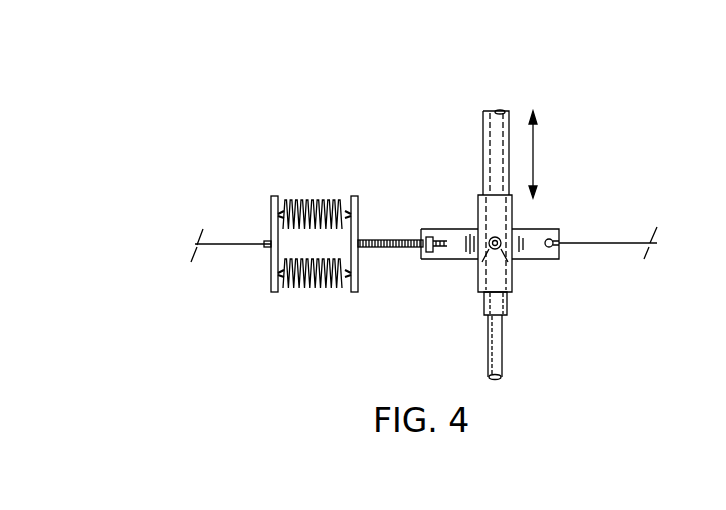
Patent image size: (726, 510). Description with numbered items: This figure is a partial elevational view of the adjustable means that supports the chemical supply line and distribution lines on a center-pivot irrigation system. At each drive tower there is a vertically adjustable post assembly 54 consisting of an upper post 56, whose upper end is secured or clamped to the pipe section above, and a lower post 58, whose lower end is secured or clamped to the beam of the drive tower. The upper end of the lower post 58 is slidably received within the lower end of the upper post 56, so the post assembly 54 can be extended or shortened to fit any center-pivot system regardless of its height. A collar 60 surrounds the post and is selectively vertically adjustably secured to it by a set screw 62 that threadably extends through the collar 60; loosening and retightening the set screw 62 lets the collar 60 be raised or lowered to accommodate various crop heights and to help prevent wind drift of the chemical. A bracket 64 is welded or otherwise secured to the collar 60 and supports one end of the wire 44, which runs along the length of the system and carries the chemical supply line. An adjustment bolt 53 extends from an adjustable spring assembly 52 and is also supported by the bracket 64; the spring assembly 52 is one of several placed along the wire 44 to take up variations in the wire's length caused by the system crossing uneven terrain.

The wire 44 is at (623, 241).
The adjustable spring assembly 52 is at (358, 197).
The adjustment bolt 53 is at (400, 247).
The vertically adjustable post assembly 54 is at (521, 94).
The upper post 56 is at (508, 120).
The lower post 58 is at (495, 342).
The collar 60 is at (516, 219).
The set screw 62 is at (503, 246).
The bracket 64 is at (541, 235).